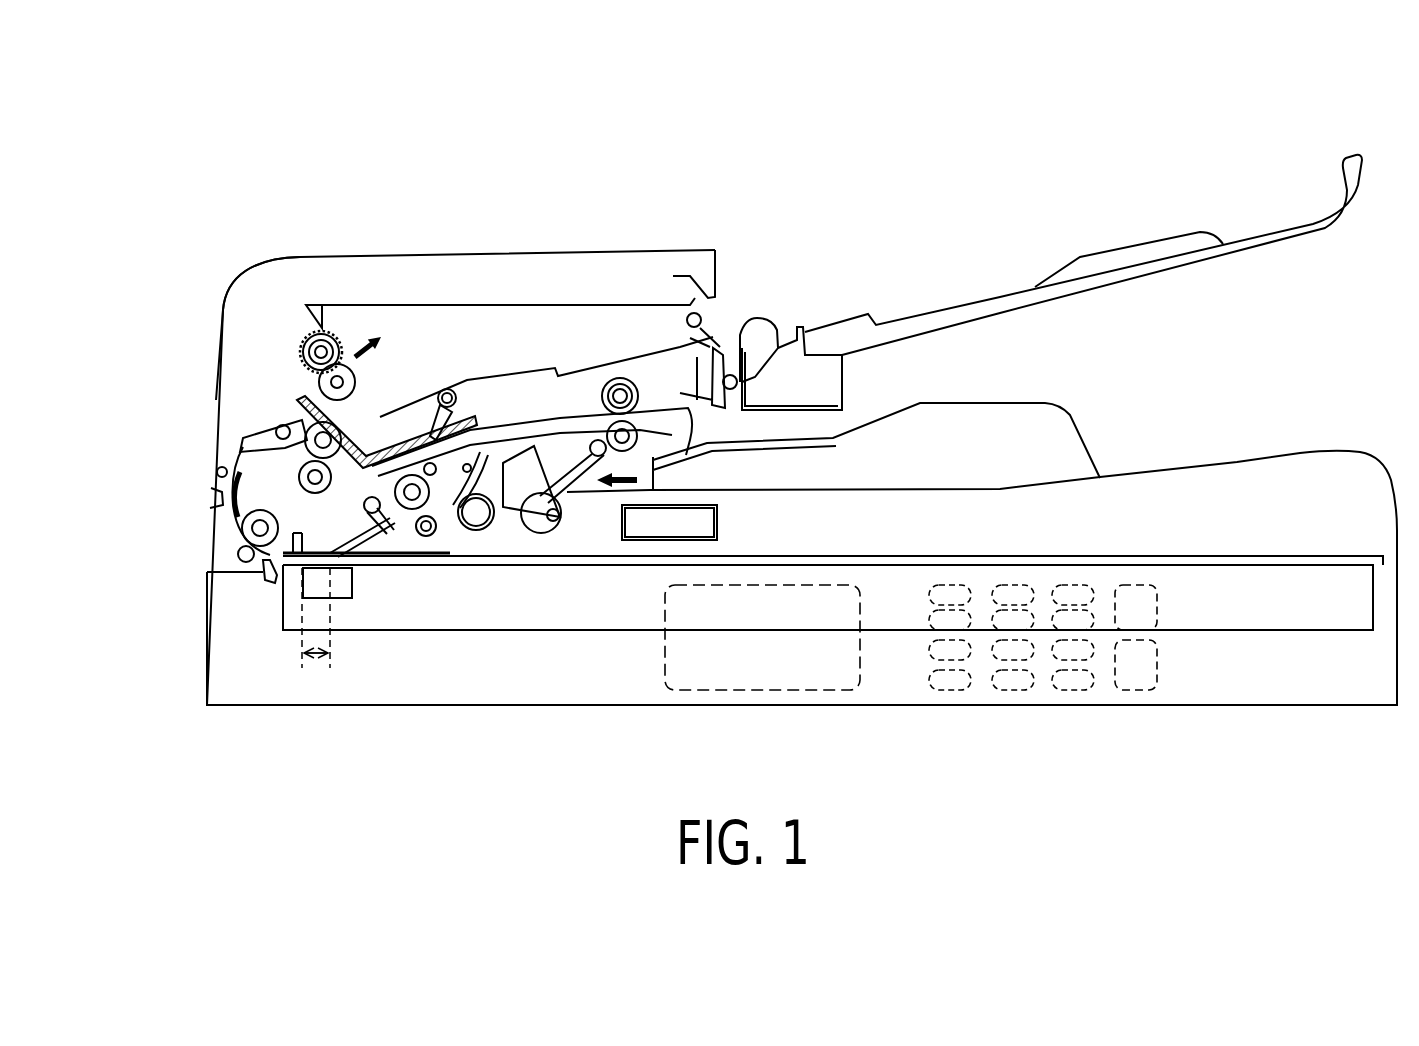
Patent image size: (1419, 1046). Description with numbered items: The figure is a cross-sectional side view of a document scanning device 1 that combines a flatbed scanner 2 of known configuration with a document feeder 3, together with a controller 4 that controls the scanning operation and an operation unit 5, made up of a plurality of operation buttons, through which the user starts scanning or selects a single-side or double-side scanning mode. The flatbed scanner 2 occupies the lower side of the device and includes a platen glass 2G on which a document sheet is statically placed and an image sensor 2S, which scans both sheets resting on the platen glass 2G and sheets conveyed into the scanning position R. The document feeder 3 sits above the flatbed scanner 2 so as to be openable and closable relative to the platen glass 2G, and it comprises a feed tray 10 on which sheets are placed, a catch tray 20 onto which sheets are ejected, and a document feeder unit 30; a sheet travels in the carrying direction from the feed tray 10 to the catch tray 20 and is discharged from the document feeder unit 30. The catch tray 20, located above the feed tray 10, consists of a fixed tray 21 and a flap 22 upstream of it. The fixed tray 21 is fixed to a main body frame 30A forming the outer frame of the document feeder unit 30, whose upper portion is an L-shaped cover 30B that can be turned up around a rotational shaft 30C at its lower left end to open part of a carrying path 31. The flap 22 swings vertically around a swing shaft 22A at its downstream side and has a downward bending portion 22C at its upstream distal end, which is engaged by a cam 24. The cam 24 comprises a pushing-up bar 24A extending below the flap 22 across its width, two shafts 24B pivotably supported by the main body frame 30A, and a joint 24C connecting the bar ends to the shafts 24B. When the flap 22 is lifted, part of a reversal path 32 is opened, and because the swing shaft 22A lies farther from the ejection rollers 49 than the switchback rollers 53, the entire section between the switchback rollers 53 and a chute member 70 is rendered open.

The document scanning device 1 is at (857, 105).
The flatbed scanner 2 is at (779, 611).
The image sensor 2S is at (350, 587).
The platen glass 2G is at (570, 563).
The document feeder 3 is at (438, 410).
The controller 4 is at (717, 518).
The operation unit 5 is at (1172, 680).
The feed tray 10 is at (982, 565).
The catch tray 20 is at (1051, 279).
The fixed tray 21 is at (876, 290).
The flap 22 is at (508, 348).
The swing shaft 22A is at (686, 320).
The bending portion 22C is at (388, 403).
The cam 24 is at (452, 401).
The pushing-up bar 24A is at (430, 430).
The shafts 24B is at (448, 380).
The joint 24C is at (440, 410).
The document feeder unit 30 is at (427, 429).
The main body frame 30A is at (200, 500).
The cover 30B is at (218, 328).
The rotational shaft 30C is at (222, 466).
The carrying path 31 is at (230, 533).
The reversal path 32 is at (557, 413).
The ejection rollers 49 is at (322, 384).
The switchback rollers 53 is at (650, 424).
The chute member 70 is at (325, 352).
The scanning position R is at (316, 629).